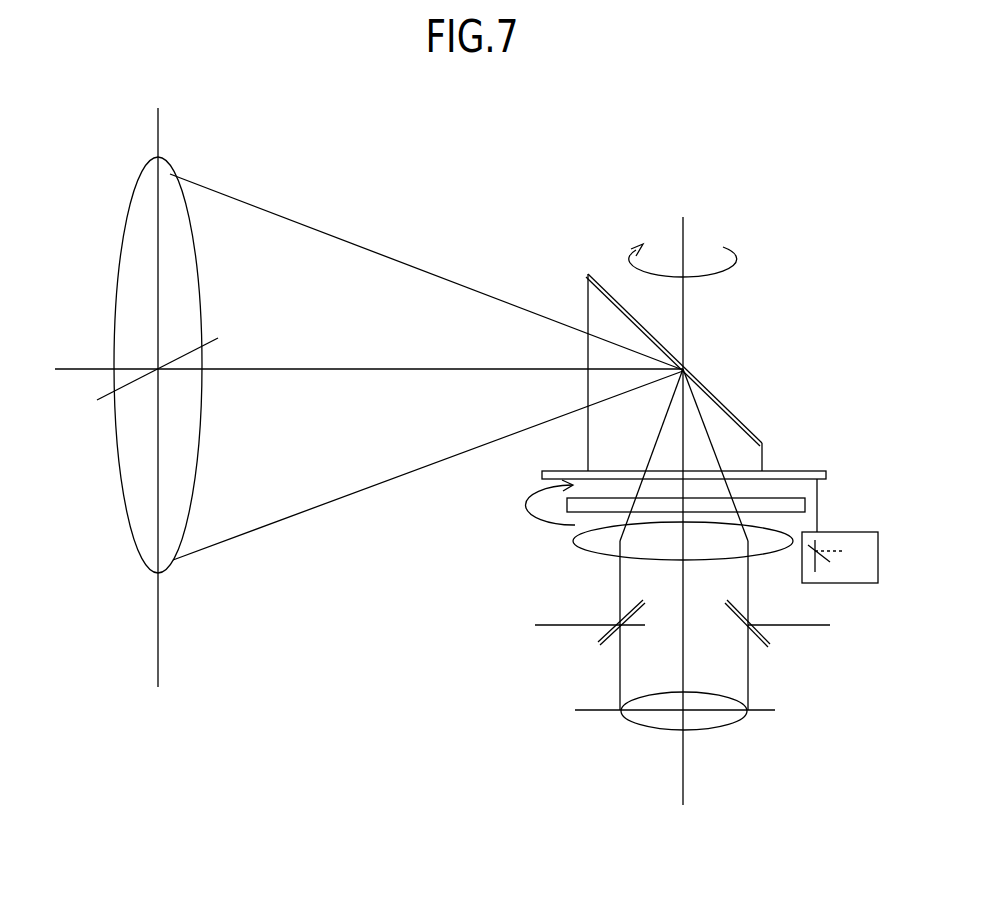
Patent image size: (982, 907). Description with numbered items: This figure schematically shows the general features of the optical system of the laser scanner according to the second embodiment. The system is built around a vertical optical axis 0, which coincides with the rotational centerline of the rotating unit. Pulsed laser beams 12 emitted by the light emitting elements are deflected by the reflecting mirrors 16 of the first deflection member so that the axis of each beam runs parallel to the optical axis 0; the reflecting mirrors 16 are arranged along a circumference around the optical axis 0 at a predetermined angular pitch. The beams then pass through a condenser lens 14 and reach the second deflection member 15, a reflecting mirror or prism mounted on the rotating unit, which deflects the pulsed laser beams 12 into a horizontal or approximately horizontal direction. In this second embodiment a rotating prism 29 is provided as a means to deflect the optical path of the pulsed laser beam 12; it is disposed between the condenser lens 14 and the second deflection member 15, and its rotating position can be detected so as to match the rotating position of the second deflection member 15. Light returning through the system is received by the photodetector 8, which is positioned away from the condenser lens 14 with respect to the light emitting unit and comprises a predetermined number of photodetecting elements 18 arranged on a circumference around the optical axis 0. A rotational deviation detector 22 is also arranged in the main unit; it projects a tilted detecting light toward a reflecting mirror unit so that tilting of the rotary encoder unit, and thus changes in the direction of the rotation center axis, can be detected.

The pulsed laser beam 12 is at (362, 247).
The optical axis 0 is at (685, 243).
The second deflection member 15 is at (720, 398).
The rotating prism 29 is at (767, 500).
The condenser lens 14 is at (590, 546).
The rotational deviation detector 22 is at (843, 586).
The reflecting mirror 16 is at (770, 640).
The photodetecting element 18 is at (633, 724).
The photodetector 8 is at (735, 730).